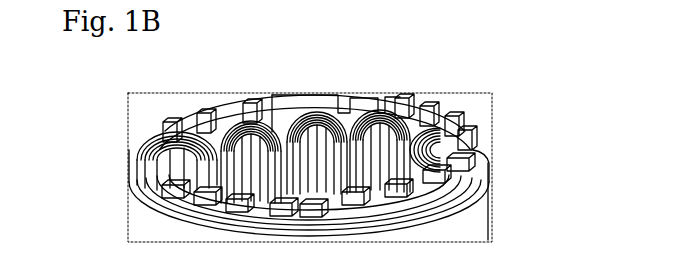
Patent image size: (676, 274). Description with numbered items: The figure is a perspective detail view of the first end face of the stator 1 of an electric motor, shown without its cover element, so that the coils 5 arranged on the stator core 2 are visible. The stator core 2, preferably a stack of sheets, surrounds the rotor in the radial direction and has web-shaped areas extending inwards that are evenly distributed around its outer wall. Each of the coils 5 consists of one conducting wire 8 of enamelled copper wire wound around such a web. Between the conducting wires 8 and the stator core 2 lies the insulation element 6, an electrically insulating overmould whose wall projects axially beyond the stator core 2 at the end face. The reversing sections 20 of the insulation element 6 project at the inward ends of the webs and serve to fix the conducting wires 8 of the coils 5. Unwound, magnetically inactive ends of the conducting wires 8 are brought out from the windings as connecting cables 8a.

The stator 1 is at (526, 134).
The stator core 2 is at (388, 97).
The coils 5 is at (185, 128).
The conducting wire 8 is at (157, 135).
The insulation element 6 is at (308, 105).
The reversing sections 20 is at (275, 135).
The connecting cables 8a is at (388, 213).